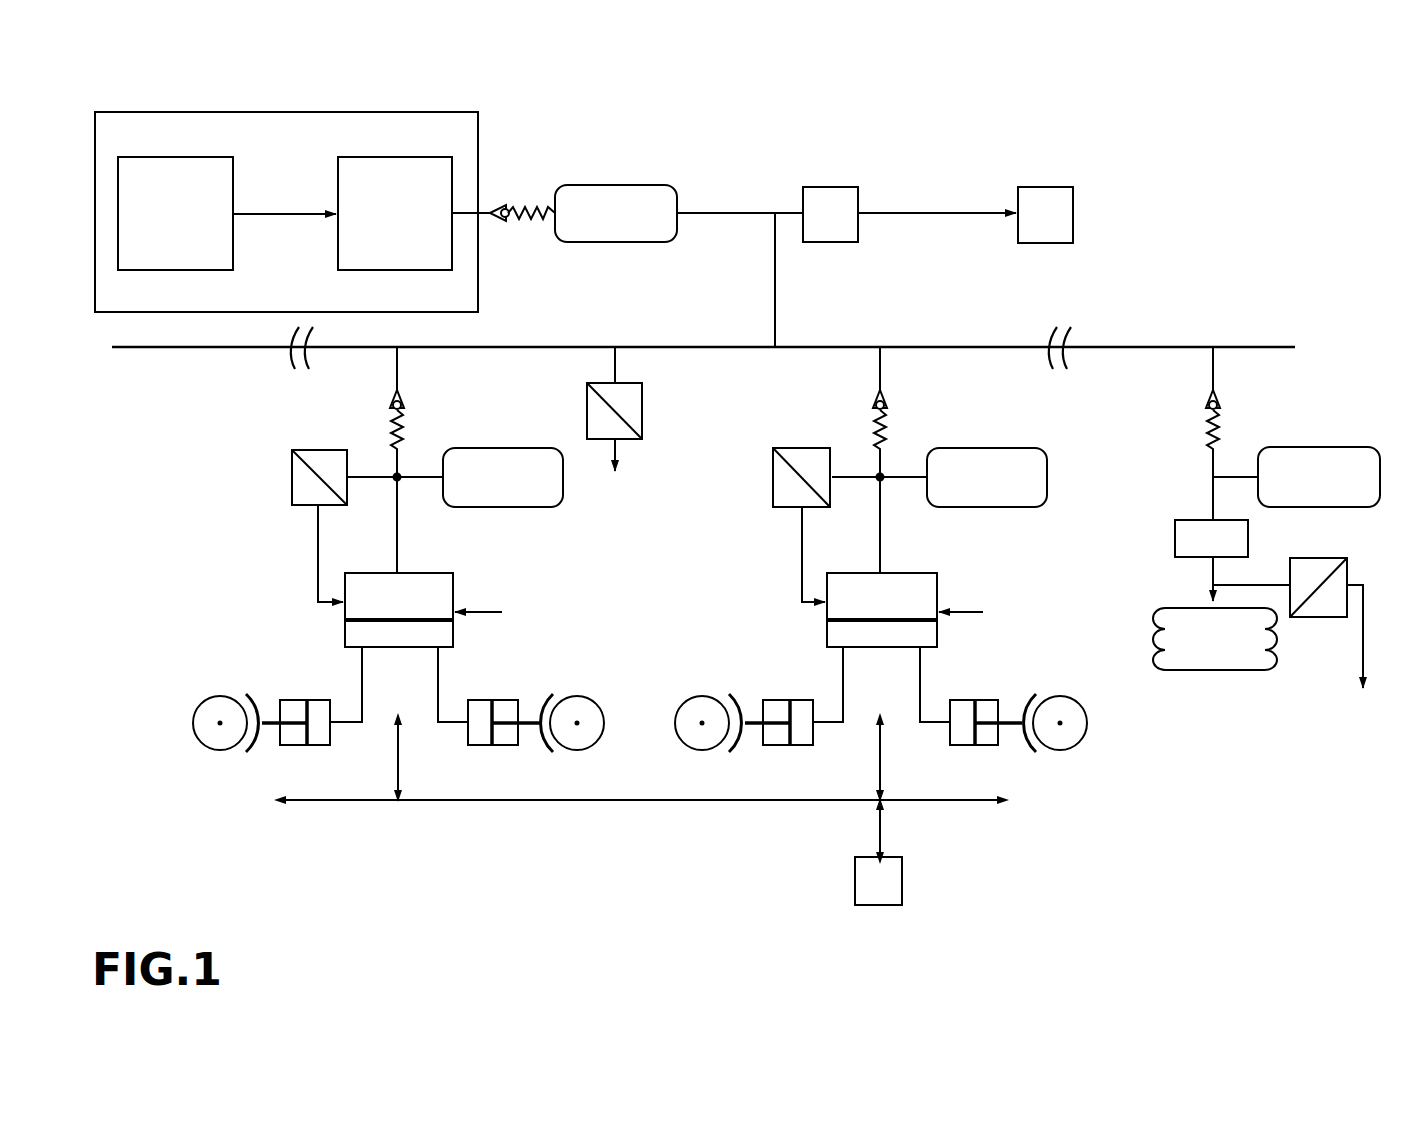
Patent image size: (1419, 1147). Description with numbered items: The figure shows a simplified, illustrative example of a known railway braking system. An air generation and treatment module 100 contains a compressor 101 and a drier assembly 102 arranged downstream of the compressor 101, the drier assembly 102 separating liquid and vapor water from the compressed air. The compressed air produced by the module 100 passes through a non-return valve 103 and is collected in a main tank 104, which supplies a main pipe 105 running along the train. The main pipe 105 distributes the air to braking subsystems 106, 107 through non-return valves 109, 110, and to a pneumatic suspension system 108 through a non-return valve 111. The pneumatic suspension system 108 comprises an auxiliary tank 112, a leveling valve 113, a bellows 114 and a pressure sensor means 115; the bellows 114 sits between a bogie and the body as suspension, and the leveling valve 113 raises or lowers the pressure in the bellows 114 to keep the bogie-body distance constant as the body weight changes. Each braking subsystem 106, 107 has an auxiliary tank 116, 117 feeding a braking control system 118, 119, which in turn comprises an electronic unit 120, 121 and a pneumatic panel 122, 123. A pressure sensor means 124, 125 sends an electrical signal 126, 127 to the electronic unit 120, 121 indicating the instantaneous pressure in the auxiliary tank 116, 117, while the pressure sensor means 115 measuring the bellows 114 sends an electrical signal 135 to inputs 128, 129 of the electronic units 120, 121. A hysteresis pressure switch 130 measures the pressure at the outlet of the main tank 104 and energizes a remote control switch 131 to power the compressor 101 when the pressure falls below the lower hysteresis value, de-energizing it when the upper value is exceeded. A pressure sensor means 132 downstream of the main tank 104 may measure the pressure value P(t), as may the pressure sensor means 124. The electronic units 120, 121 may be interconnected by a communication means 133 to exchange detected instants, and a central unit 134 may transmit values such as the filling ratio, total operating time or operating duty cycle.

The air generation and treatment module 100 is at (328, 198).
The compressor 101 is at (188, 175).
The drier assembly 102 is at (375, 178).
The non-return valve 103 is at (530, 225).
The main tank 104 is at (600, 205).
The main pipe 105 is at (805, 345).
The braking subsystem 106 is at (363, 569).
The braking subsystem 107 is at (848, 569).
The pneumatic suspension system 108 is at (1209, 551).
The non-return valve 109 is at (403, 432).
The non-return valve 110 is at (886, 432).
The non-return valve 111 is at (1219, 432).
The auxiliary tank 112 is at (1330, 480).
The leveling valve 113 is at (1195, 535).
The bellows 114 is at (1210, 655).
The pressure sensor means 115 is at (1325, 620).
The auxiliary tank 116 is at (515, 482).
The auxiliary tank 117 is at (998, 482).
The braking control system 118 is at (343, 635).
The braking control system 119 is at (825, 635).
The electronic unit 120 is at (412, 590).
The electronic unit 121 is at (895, 590).
The pneumatic panel 122 is at (408, 630).
The pneumatic panel 123 is at (890, 630).
The pressure sensor means 124 is at (290, 455).
The pressure sensor means 125 is at (772, 455).
The electrical signal 126 is at (316, 595).
The electrical signal 127 is at (800, 595).
The input 128 is at (487, 615).
The input 129 is at (972, 615).
The hysteresis pressure switch 130 is at (828, 208).
The remote control switch 131 is at (1045, 210).
The pressure sensor means 132 is at (645, 410).
The communication means 133 is at (495, 803).
The central unit 134 is at (885, 880).
The electrical signal 135 is at (1368, 650).